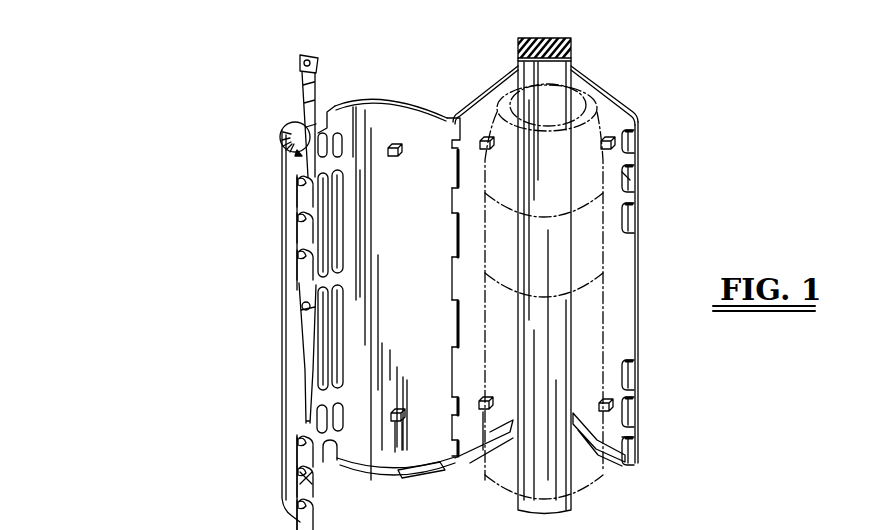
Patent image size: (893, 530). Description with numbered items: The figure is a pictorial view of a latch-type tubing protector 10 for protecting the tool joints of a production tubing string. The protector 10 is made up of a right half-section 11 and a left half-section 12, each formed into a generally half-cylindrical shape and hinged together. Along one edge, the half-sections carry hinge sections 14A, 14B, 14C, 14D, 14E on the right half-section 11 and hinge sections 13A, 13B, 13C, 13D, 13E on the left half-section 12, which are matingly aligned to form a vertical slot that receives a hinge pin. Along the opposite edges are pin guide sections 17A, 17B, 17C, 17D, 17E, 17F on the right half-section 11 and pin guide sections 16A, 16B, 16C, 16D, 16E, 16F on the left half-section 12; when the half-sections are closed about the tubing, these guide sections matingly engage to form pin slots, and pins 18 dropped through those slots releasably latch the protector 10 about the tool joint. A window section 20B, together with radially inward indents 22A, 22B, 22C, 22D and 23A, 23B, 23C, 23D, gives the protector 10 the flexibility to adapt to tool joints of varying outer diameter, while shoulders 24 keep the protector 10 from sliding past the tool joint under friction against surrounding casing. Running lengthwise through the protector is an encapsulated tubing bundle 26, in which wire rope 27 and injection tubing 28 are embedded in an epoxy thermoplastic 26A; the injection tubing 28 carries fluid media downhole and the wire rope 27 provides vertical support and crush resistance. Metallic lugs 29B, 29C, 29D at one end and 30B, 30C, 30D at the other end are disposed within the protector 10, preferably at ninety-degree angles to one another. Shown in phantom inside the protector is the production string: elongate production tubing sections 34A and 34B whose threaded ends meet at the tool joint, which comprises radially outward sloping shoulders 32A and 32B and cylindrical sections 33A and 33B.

The tubing protector 10 is at (150, 438).
The right half-section 11 is at (620, 253).
The left half-section 12 is at (287, 368).
The hinge section 13A is at (457, 182).
The hinge section 13B is at (457, 240).
The hinge section 13C is at (457, 325).
The hinge section 13D is at (457, 400).
The hinge section 13E is at (457, 450).
The hinge section 14A is at (457, 152).
The hinge section 14B is at (458, 203).
The hinge section 14C is at (458, 268).
The hinge section 14D is at (458, 367).
The hinge section 14E is at (458, 428).
The pin guide section 16A is at (300, 203).
The pin guide section 16B is at (302, 237).
The pin guide section 16C is at (300, 278).
The pin guide section 16D is at (298, 445).
The pin guide section 16E is at (300, 482).
The pin guide section 16F is at (298, 523).
The pin guide section 17A is at (635, 143).
The pin guide section 17B is at (634, 183).
The pin guide section 17C is at (634, 218).
The pin guide section 17D is at (634, 372).
The pin guide section 17E is at (634, 410).
The pin guide section 17F is at (634, 455).
The pin 18 is at (311, 60).
The window section 20B is at (304, 304).
The indent 22A is at (320, 127).
The indent 22B is at (318, 180).
The indent 22C is at (318, 362).
The indent 22D is at (308, 422).
The indent 23A is at (337, 130).
The indent 23B is at (300, 156).
The indent 23C is at (328, 345).
The indent 23D is at (333, 417).
The shoulder 24 is at (296, 122).
The encapsulated tubing bundle 26 is at (552, 77).
The epoxy thermoplastic 26A is at (558, 38).
The wire rope 27 is at (518, 52).
The injection tubing 28 is at (546, 40).
The metallic lug 29B is at (398, 145).
The metallic lug 29C is at (488, 130).
The metallic lug 29D is at (612, 138).
The metallic lug 30B is at (395, 426).
The metallic lug 30C is at (485, 458).
The metallic lug 30D is at (610, 402).
The shoulder 32A is at (630, 180).
The shoulder 32B is at (632, 437).
The cylindrical section 33A is at (590, 268).
The cylindrical section 33B is at (598, 320).
The production tubing section 34A is at (587, 127).
The production tubing section 34B is at (582, 477).